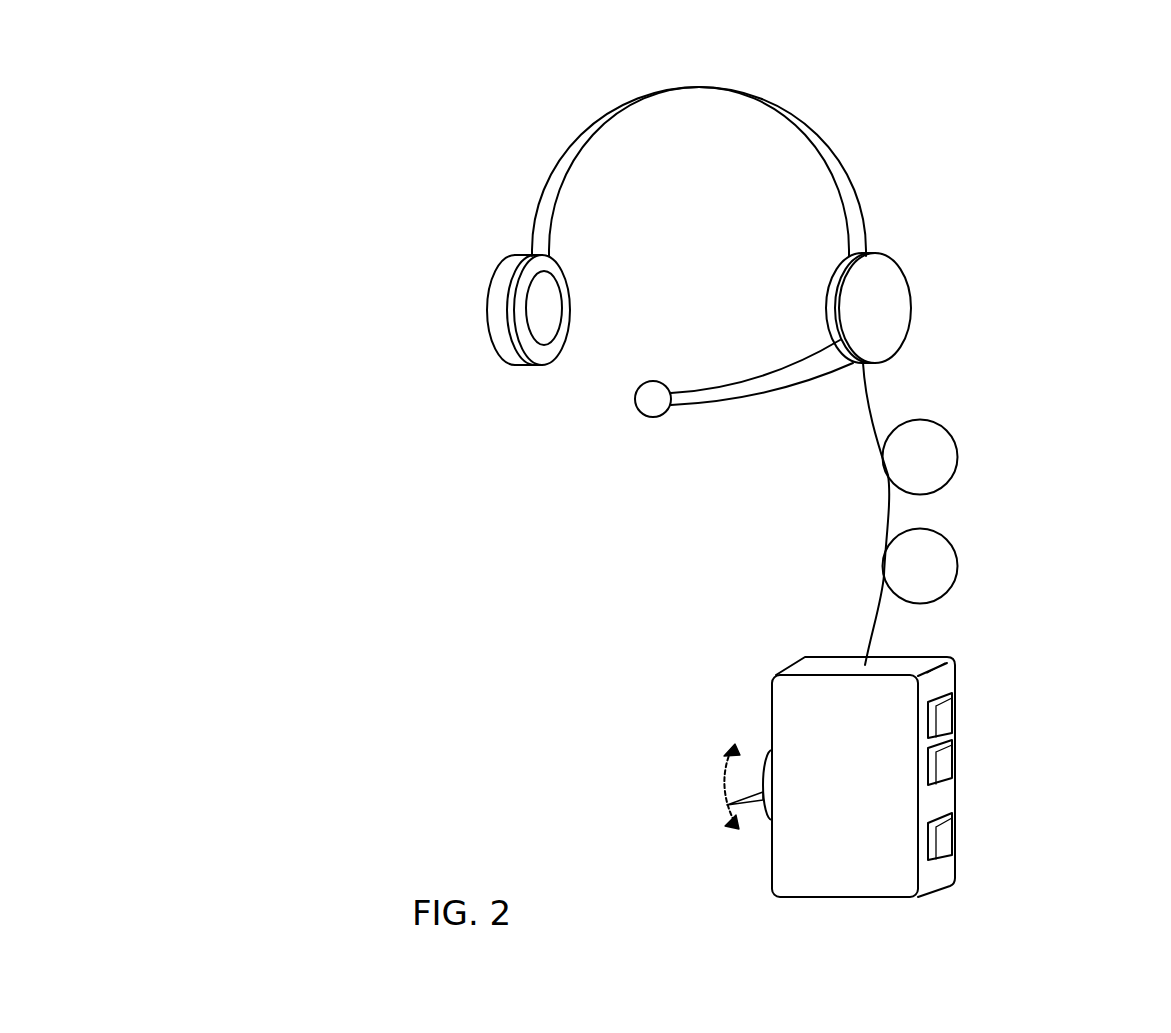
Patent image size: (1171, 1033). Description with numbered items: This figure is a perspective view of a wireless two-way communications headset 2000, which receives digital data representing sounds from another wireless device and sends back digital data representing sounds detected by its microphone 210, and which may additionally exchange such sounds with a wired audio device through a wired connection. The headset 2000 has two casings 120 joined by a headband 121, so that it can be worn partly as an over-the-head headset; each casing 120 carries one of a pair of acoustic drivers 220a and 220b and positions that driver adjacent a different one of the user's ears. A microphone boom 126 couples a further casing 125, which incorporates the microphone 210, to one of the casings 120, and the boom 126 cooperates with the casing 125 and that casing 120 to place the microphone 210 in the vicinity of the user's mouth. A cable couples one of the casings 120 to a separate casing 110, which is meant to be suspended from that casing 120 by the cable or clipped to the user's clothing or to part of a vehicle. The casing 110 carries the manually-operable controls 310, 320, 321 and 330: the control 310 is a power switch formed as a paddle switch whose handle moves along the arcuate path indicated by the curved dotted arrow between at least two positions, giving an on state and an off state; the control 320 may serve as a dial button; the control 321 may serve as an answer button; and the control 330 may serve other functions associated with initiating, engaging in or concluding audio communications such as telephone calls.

The wireless two-way communications headset 2000 is at (1022, 80).
The headband 121 is at (572, 141).
The casing 120 is at (700, 309).
The acoustic driver 220a is at (625, 300).
The acoustic driver 220b is at (813, 308).
The microphone 210 is at (706, 394).
The microphone boom 126 is at (782, 380).
The casing 125 is at (655, 418).
The casing 110 is at (867, 797).
The manually-operable control 310 is at (727, 805).
The manually-operable control 320 is at (942, 712).
The manually-operable control 321 is at (942, 760).
The manually-operable control 330 is at (942, 843).